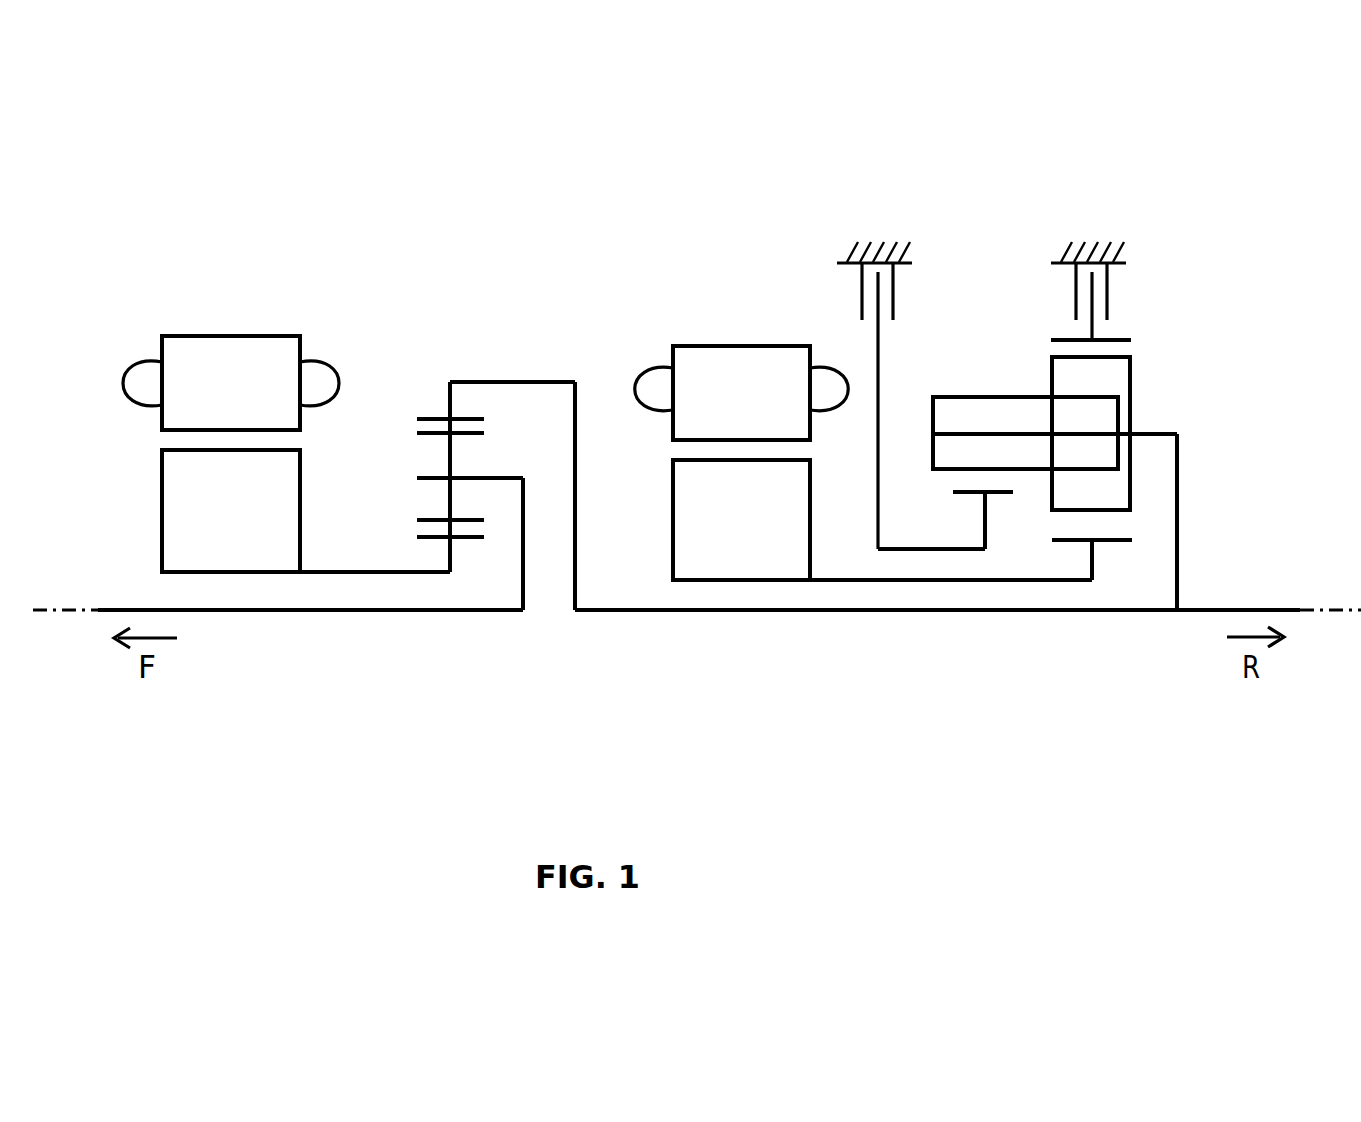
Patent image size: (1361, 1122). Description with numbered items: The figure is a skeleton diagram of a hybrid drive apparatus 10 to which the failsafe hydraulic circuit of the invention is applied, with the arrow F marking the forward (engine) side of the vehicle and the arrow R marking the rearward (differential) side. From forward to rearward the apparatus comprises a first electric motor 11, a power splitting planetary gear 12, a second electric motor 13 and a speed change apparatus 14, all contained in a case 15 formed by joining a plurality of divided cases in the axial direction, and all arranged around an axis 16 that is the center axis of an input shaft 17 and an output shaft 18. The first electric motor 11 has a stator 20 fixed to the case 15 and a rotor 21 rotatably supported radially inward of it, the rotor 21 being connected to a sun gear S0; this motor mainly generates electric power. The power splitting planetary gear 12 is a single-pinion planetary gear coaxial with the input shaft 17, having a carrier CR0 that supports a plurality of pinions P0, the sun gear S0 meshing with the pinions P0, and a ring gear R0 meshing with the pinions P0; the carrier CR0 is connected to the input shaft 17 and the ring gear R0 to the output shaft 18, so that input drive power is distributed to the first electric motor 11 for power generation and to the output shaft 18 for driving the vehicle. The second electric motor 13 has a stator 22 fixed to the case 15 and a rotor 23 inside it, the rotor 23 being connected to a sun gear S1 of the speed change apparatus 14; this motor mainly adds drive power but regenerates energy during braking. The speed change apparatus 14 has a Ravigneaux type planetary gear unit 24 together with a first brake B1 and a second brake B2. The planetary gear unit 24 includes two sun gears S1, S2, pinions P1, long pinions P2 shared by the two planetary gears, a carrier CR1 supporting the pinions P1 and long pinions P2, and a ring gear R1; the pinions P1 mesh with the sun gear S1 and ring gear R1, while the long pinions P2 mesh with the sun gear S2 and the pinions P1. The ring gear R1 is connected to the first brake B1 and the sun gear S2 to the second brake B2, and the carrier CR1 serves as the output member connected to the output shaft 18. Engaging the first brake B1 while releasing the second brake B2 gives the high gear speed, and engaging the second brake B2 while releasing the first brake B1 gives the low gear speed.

The hybrid drive apparatus 10 is at (643, 210).
The first electric motor 11 is at (207, 391).
The power splitting planetary gear 12 is at (437, 436).
The second electric motor 13 is at (717, 400).
The speed change apparatus 14 is at (1041, 367).
The case 15 is at (852, 252).
The axis 16 is at (1342, 614).
The input shaft 17 is at (494, 613).
The output shaft 18 is at (893, 613).
The stator 20 is at (177, 415).
The rotor 21 is at (176, 520).
The stator 22 is at (688, 428).
The rotor 23 is at (685, 534).
The Ravigneaux type planetary gear unit 24 is at (1003, 394).
The ring gear R0 is at (434, 410).
The pinions P0 is at (450, 450).
The sun gear S0 is at (440, 530).
The carrier CR0 is at (524, 510).
The first brake B1 is at (893, 303).
The second brake B2 is at (1076, 297).
The pinions P1 is at (1133, 378).
The long pinions P2 is at (964, 396).
The ring gear R1 is at (1124, 340).
The sun gear S1 is at (1101, 543).
The sun gear S2 is at (975, 494).
The carrier CR1 is at (1180, 462).